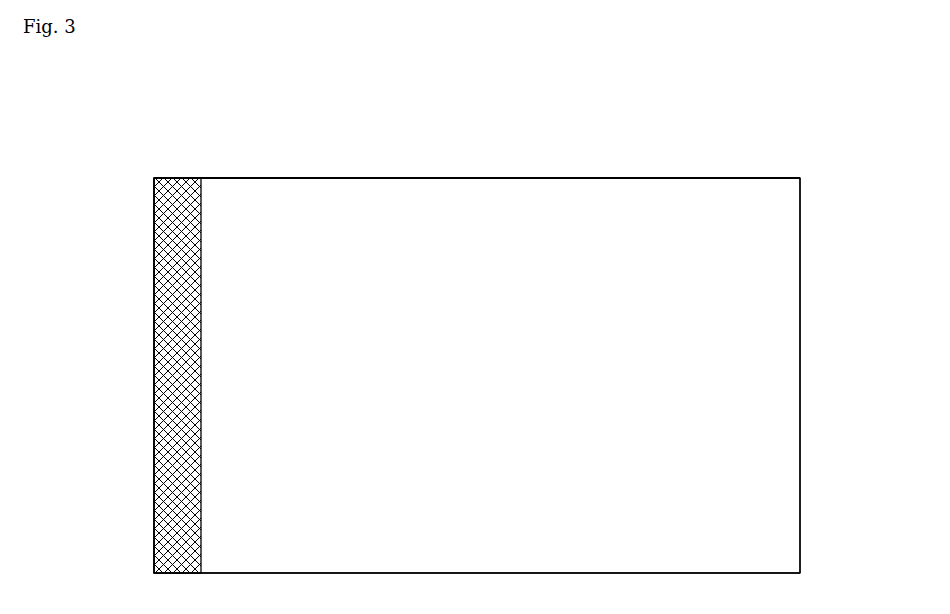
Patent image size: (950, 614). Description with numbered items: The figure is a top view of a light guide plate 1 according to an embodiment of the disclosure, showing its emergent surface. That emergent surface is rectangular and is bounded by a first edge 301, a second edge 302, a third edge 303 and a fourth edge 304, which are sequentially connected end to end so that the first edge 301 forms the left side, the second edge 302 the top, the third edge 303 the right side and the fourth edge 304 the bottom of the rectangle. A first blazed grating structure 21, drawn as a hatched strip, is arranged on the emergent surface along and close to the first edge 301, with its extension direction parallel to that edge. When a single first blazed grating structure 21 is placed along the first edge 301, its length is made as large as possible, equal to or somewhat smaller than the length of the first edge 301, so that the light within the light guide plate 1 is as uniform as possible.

The light guide plate 1 is at (614, 186).
The first blazed grating structure 21 is at (178, 178).
The first edge 301 is at (153, 293).
The second edge 302 is at (386, 178).
The third edge 303 is at (799, 333).
The fourth edge 304 is at (500, 572).